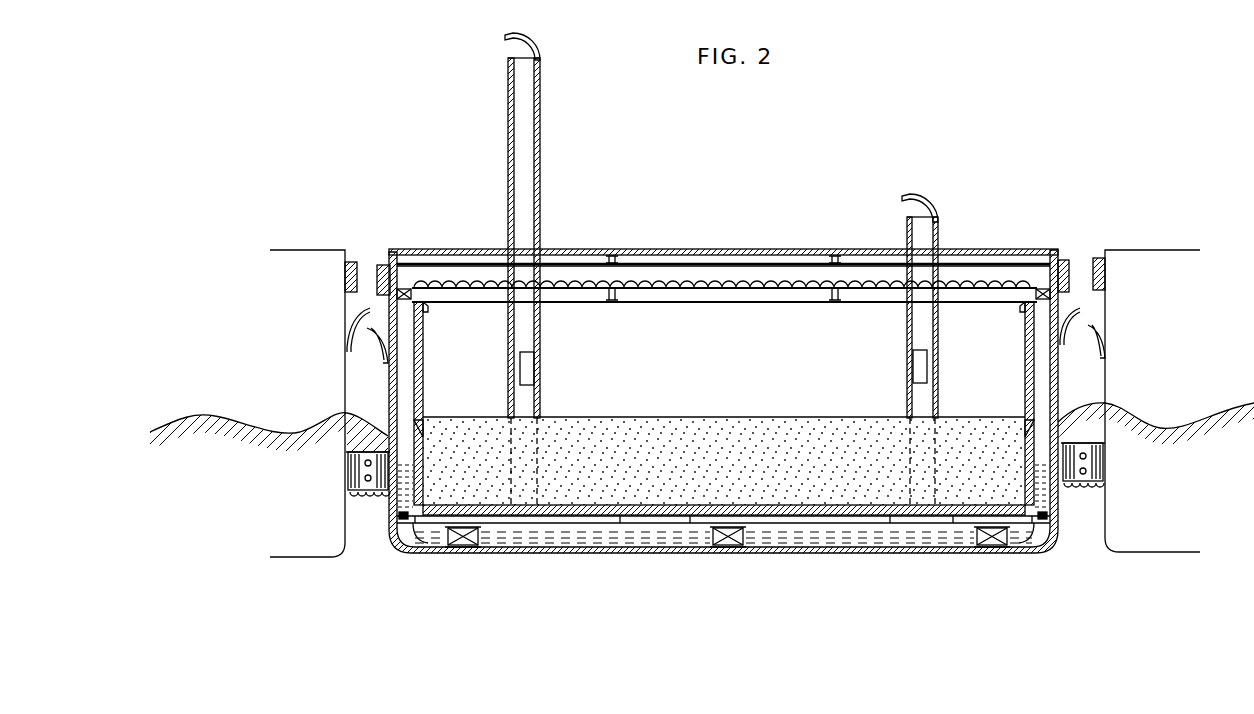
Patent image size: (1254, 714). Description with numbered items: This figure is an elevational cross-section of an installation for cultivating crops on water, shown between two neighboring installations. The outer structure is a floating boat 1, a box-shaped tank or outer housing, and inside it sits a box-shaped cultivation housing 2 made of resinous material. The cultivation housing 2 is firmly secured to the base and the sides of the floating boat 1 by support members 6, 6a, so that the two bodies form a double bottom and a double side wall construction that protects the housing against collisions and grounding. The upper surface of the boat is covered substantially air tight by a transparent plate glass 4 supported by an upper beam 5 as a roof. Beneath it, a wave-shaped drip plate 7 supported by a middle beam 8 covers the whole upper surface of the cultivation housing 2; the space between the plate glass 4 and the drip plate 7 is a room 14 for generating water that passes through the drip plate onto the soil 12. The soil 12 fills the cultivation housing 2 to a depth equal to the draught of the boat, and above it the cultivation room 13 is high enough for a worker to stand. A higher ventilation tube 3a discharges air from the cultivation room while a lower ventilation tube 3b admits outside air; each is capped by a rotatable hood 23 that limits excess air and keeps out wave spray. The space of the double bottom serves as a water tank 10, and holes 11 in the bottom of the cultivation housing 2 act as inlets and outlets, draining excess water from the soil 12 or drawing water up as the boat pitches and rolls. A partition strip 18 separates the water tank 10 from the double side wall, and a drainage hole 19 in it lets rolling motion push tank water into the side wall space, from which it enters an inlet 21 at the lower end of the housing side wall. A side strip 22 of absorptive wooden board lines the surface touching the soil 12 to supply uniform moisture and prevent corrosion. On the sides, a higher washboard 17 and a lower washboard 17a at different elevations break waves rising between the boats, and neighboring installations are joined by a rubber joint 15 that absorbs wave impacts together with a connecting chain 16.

The floating boat 1 is at (1059, 358).
The cultivation housing 2 is at (1036, 398).
The higher ventilation tube 3a is at (540, 128).
The lower ventilation tube 3b is at (940, 236).
The transparent plate glass 4 is at (596, 250).
The upper beam 5 is at (761, 262).
The support member 6 is at (478, 540).
The support member 6a is at (404, 290).
The drip plate 7 is at (681, 281).
The middle beam 8 is at (692, 298).
The water tank 10 is at (597, 543).
The holes 11 is at (563, 520).
The soil 12 is at (703, 417).
The cultivation room 13 is at (810, 385).
The room for generating water 14 is at (570, 250).
The rubber joint 15 is at (368, 452).
The connecting chain 16 is at (370, 500).
The washboard 17 is at (346, 313).
The lower washboard 17a is at (371, 331).
The partition strip 18 is at (428, 527).
The drainage hole 19 is at (404, 521).
The inlet 21 is at (391, 515).
The side strip 22 is at (424, 442).
The hood 23 is at (530, 46).